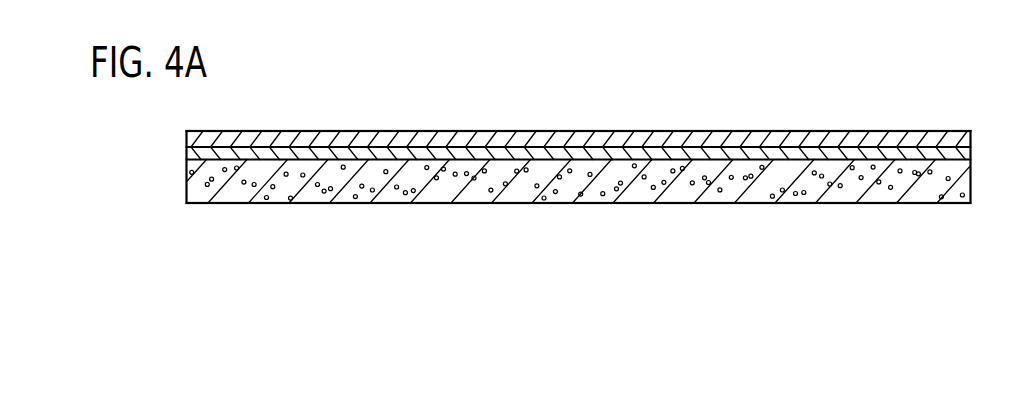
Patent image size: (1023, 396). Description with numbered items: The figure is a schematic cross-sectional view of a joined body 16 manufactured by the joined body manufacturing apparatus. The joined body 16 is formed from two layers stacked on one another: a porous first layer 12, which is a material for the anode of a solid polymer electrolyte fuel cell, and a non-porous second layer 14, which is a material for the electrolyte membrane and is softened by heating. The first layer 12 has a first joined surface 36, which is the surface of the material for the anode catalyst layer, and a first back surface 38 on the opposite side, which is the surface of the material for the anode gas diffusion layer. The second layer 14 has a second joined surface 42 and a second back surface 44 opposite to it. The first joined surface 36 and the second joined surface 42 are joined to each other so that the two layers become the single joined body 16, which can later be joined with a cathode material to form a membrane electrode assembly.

The first layer 12 is at (924, 204).
The second layer 14 is at (946, 131).
The joined body 16 is at (707, 119).
The first joined surface 36 is at (847, 139).
The first back surface 38 is at (788, 204).
The second joined surface 42 is at (627, 148).
The second back surface 44 is at (592, 131).